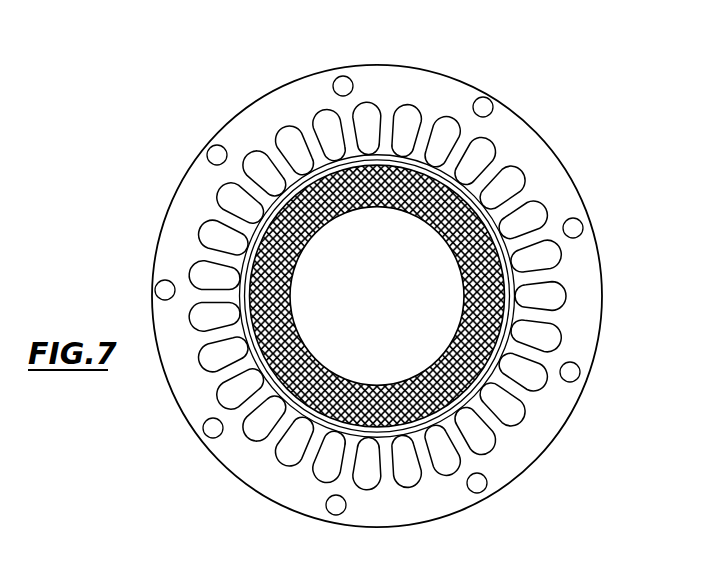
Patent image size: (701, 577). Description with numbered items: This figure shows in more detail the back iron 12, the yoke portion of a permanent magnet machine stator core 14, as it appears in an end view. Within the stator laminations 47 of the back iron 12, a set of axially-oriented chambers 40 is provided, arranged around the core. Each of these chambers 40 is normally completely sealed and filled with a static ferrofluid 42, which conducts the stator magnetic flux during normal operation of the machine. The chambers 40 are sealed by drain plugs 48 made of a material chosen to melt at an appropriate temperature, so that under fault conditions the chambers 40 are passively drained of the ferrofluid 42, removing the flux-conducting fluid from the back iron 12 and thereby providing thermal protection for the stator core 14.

The stator core 14 is at (391, 33).
The back iron 12 is at (240, 107).
The stator laminations 47 is at (538, 162).
The drain plugs 48 is at (160, 397).
The static ferrofluid 42 is at (156, 288).
The axially-oriented chambers 40 is at (160, 397).